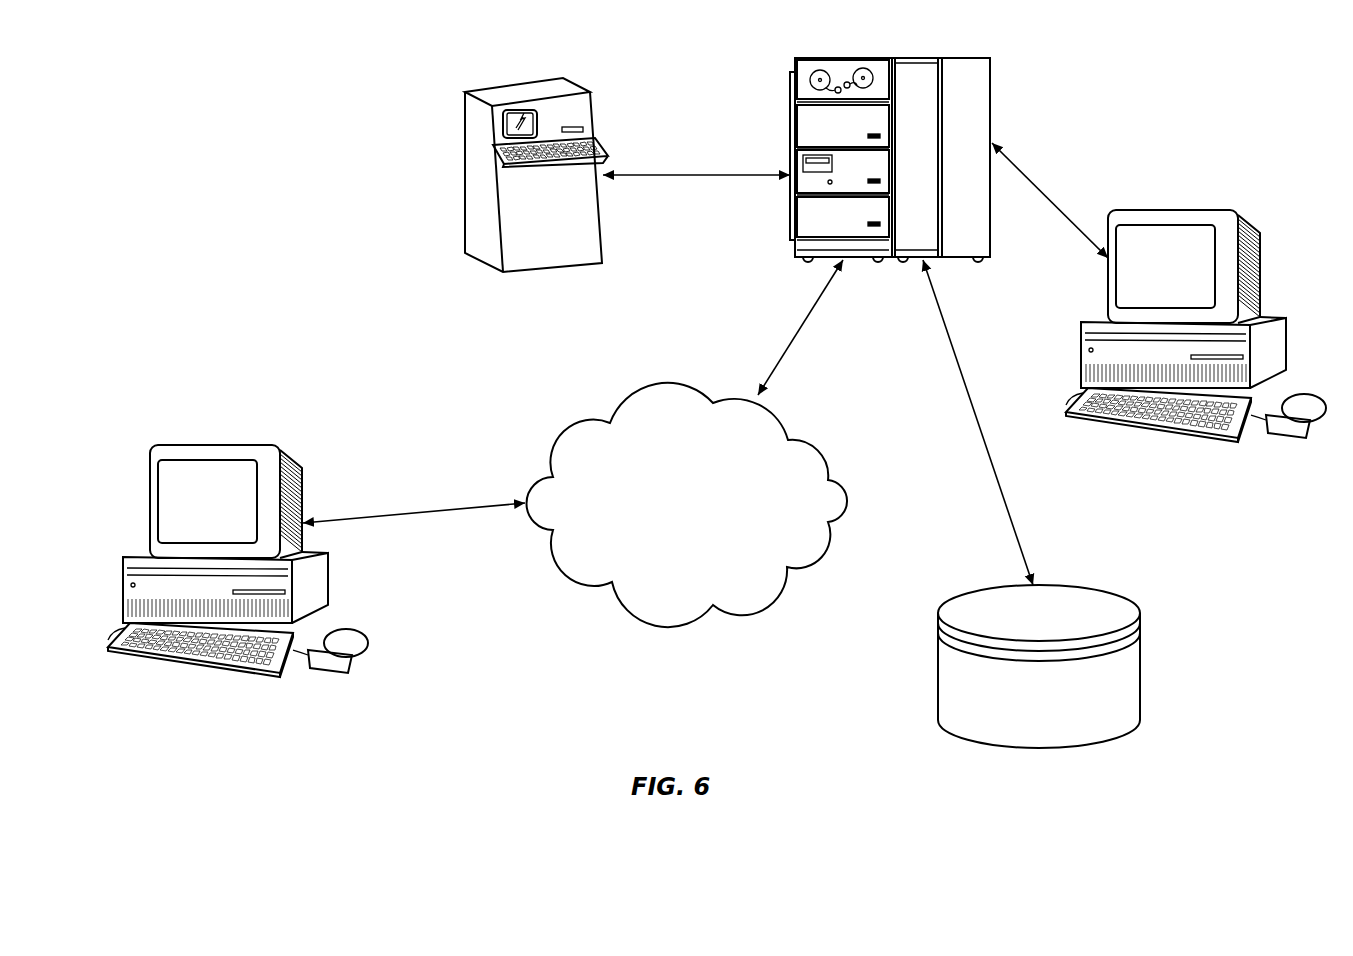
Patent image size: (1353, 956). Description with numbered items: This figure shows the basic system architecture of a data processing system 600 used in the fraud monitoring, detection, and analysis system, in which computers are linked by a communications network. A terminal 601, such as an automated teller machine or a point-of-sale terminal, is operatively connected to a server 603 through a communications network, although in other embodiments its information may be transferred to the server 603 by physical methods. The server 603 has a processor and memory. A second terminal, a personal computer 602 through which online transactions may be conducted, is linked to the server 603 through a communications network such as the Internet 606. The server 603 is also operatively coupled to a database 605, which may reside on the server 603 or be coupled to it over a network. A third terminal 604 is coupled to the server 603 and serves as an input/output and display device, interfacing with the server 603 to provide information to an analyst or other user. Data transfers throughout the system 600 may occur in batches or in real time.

The data processing system 600 is at (682, 717).
The terminal 601 is at (463, 188).
The personal computer 602 is at (150, 492).
The server 603 is at (790, 87).
The third terminal 604 is at (1263, 280).
The database 605 is at (1140, 677).
The Internet 606 is at (704, 516).